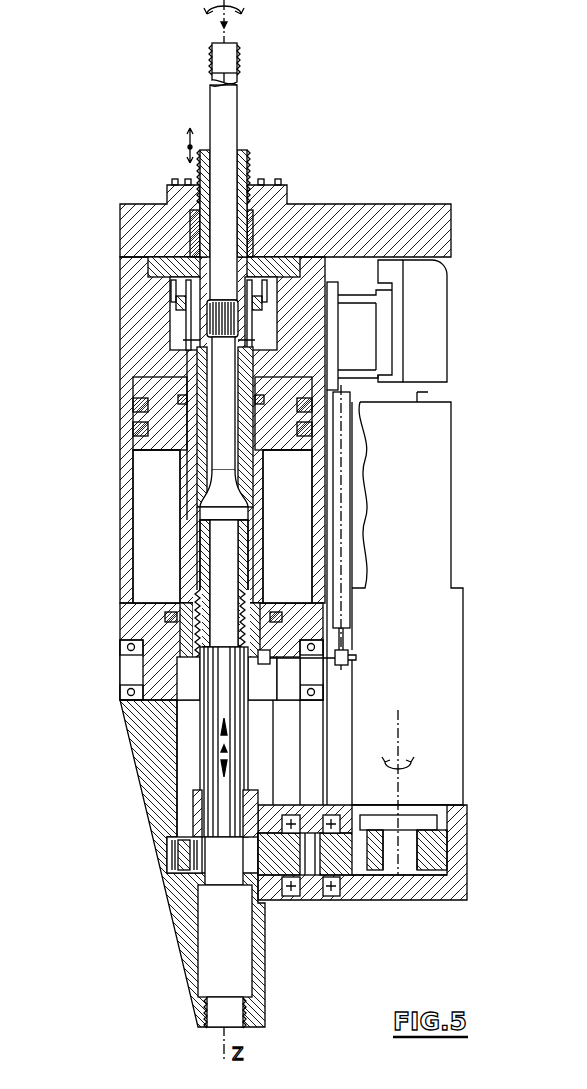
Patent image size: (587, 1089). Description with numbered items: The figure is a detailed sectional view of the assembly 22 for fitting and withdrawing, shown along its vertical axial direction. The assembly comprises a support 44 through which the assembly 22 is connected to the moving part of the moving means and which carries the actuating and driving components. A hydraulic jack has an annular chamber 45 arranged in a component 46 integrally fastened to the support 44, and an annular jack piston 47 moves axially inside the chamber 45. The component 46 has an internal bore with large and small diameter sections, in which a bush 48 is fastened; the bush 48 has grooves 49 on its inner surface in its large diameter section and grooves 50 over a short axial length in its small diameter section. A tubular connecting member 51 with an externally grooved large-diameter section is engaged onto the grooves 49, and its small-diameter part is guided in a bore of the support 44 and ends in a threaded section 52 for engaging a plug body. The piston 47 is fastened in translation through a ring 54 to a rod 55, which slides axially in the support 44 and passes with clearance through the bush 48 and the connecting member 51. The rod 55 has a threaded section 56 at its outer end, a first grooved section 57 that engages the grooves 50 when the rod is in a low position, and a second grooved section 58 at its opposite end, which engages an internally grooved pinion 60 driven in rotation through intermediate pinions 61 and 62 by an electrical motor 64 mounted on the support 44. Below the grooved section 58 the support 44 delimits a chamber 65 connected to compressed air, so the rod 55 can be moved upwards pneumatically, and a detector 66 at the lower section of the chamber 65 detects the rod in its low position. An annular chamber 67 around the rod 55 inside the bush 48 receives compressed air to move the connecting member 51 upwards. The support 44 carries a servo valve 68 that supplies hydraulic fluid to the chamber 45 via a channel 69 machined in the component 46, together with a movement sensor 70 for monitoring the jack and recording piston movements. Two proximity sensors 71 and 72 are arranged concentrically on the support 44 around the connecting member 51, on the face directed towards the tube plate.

The assembly for fitting and withdrawing 22 is at (124, 738).
The support 44 is at (432, 232).
The chamber 45 is at (170, 537).
The component 46 is at (140, 345).
The jack piston 47 is at (133, 410).
The bush 48 is at (176, 310).
The grooves 49 is at (170, 290).
The grooves 50 is at (178, 490).
The tubular connecting member 51 is at (250, 203).
The threaded section 52 is at (247, 163).
The ring 54 is at (197, 595).
The rod 55 is at (223, 603).
The threaded section 56 is at (237, 52).
The first grooved section 57 is at (224, 310).
The second grooved section 58 is at (215, 770).
The pinion 60 is at (190, 862).
The intermediate pinion 61 is at (315, 860).
The intermediate pinion 62 is at (428, 868).
The electrical motor 64 is at (455, 728).
The chamber 65 is at (212, 947).
The detector 66 is at (215, 1025).
The annular chamber 67 is at (197, 318).
The servo valve 68 is at (440, 315).
The channel 69 is at (330, 355).
The movement sensor 70 is at (350, 462).
The proximity sensor 71 is at (175, 180).
The proximity sensor 72 is at (188, 180).